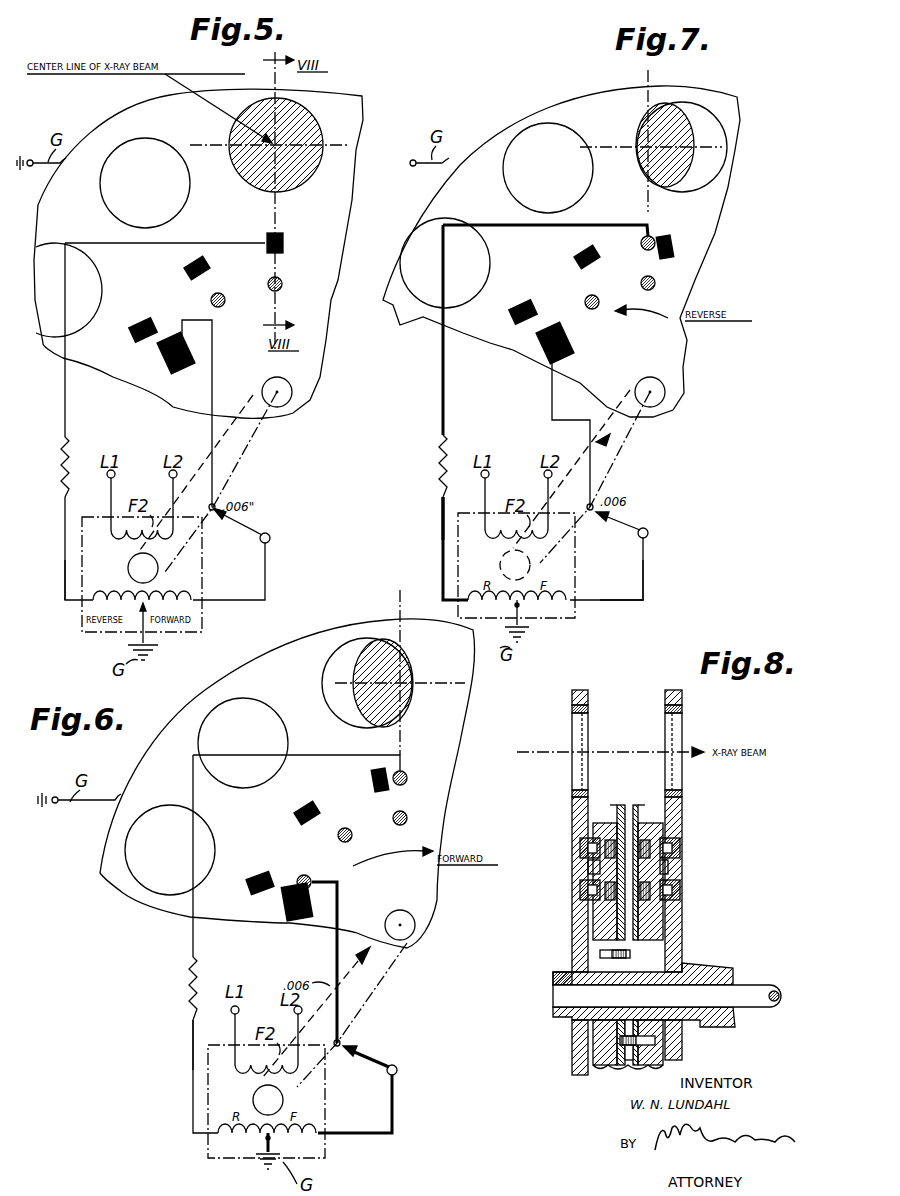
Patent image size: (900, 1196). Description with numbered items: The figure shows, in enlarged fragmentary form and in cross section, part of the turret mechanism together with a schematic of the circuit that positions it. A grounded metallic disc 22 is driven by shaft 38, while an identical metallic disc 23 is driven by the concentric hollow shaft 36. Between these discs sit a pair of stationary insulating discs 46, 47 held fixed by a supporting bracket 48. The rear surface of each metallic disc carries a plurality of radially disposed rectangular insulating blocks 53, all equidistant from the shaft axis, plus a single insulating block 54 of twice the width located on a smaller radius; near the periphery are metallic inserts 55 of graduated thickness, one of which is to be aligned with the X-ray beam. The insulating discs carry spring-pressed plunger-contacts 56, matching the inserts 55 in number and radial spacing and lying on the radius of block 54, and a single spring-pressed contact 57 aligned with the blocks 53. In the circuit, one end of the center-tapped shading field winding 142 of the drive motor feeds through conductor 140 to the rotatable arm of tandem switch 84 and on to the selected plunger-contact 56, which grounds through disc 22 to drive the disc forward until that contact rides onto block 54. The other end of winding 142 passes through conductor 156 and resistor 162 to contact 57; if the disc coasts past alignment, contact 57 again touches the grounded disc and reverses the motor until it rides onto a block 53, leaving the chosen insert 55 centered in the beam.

In FIG. 8, the metallic disc 22 is at (565, 1043).
In FIG. 8, the metallic disc 23 is at (690, 1047).
In FIG. 8, the hollow shaft 36 is at (733, 970).
In FIG. 5, the shaft 38 is at (258, 447).
In FIG. 7, the shaft 38 is at (627, 454).
In FIG. 6, the shaft 38 is at (368, 1010).
In FIG. 8, the shaft 38 is at (758, 1005).
In FIG. 8, the insulating disc 46 is at (615, 807).
In FIG. 8, the insulating disc 47 is at (650, 798).
In FIG. 8, the supporting bracket 48 is at (625, 1068).
In FIG. 5, the insulating block 53 is at (284, 253).
In FIG. 7, the insulating block 53 is at (676, 244).
In FIG. 6, the insulating block 53 is at (368, 781).
In FIG. 8, the insulating block 53 is at (580, 842).
In FIG. 5, the insulating block 54 is at (162, 356).
In FIG. 7, the insulating block 54 is at (570, 341).
In FIG. 6, the insulating block 54 is at (293, 915).
In FIG. 8, the insulating block 54 is at (580, 885).
In FIG. 5, the metallic insert 55 is at (321, 101).
In FIG. 7, the metallic insert 55 is at (720, 136).
In FIG. 6, the metallic insert 55 is at (352, 641).
In FIG. 8, the metallic insert 55 is at (574, 729).
In FIG. 5, the plunger-contact 56 is at (270, 291).
In FIG. 7, the plunger-contact 56 is at (598, 297).
In FIG. 6, the plunger-contact 56 is at (406, 819).
In FIG. 8, the plunger-contact 56 is at (592, 898).
In FIG. 5, the spring-pressed contact 57 is at (285, 242).
In FIG. 7, the spring-pressed contact 57 is at (659, 236).
In FIG. 6, the spring-pressed contact 57 is at (407, 776).
In FIG. 8, the spring-pressed contact 57 is at (680, 840).
In FIG. 5, the tandem switch 84 is at (239, 523).
In FIG. 7, the tandem switch 84 is at (628, 523).
In FIG. 6, the tandem switch 84 is at (350, 1058).
In FIG. 7, the conductor 140 is at (645, 571).
In FIG. 6, the conductor 140 is at (392, 1098).
In FIG. 7, the shading field winding 142 is at (530, 610).
In FIG. 6, the shading field winding 142 is at (258, 1142).
In FIG. 5, the conductor 156 is at (65, 590).
In FIG. 7, the conductor 156 is at (443, 531).
In FIG. 6, the conductor 156 is at (193, 1059).
In FIG. 5, the resistor 162 is at (62, 466).
In FIG. 7, the resistor 162 is at (440, 467).
In FIG. 6, the resistor 162 is at (190, 998).